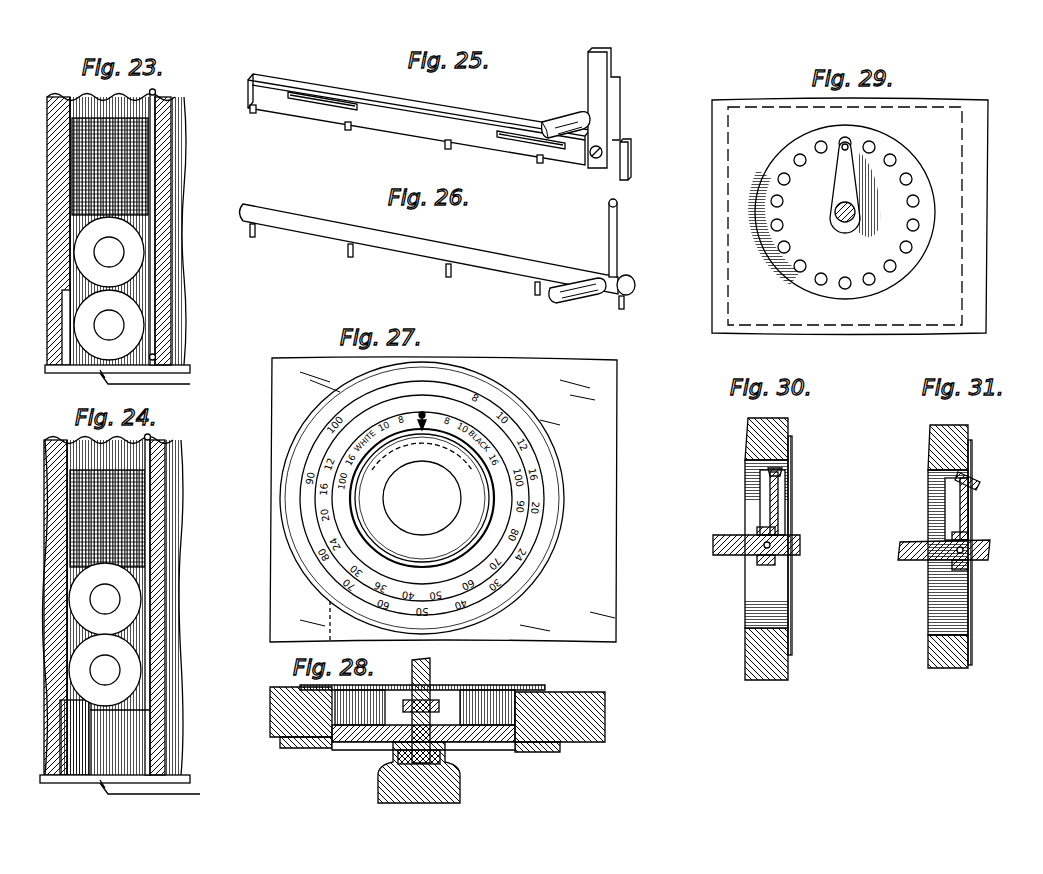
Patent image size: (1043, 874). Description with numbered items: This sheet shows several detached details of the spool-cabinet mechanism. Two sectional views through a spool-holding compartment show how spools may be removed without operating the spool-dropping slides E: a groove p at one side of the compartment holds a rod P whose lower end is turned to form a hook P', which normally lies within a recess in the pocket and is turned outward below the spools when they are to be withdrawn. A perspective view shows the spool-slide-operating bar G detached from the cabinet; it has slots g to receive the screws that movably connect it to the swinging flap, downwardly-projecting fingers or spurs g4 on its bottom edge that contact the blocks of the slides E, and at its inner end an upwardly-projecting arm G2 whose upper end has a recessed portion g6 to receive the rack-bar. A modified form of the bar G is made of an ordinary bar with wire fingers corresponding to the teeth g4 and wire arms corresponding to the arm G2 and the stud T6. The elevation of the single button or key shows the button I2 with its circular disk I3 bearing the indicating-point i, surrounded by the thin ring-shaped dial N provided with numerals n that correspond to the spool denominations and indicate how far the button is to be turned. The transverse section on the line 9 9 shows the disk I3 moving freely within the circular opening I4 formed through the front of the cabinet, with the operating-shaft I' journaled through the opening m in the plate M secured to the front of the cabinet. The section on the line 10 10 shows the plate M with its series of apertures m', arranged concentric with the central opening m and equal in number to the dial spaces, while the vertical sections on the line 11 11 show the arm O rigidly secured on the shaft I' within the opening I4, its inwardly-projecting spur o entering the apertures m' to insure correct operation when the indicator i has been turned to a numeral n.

In FIG. 23, the rod P is at (173, 227).
In FIG. 24, the rod P is at (174, 604).
In FIG. 23, the groove p is at (162, 292).
In FIG. 24, the groove p is at (155, 470).
In FIG. 23, the hook P' is at (177, 348).
In FIG. 24, the hook P' is at (120, 721).
In FIG. 23, the spool-dropping slide E is at (70, 368).
In FIG. 24, the spool-dropping slide E is at (60, 728).
In FIG. 25, the spool-slide-operating bar G is at (345, 96).
In FIG. 26, the spool-slide-operating bar G is at (490, 258).
In FIG. 25, the slot g is at (330, 100).
In FIG. 25, the finger or spur g4 is at (640, 168).
In FIG. 26, the finger or spur g4 is at (537, 290).
In FIG. 25, the recessed portion g6 is at (612, 68).
In FIG. 25, the upwardly-projecting arm G2 is at (620, 102).
In FIG. 26, the upwardly-projecting arm G2 is at (617, 246).
In FIG. 25, the cylinder T6 is at (575, 115).
In FIG. 26, the cylinder T6 is at (574, 290).
In FIG. 27, the numeral n is at (300, 466).
In FIG. 27, the ring-shaped dial N is at (558, 452).
In FIG. 28, the ring-shaped dial N is at (540, 752).
In FIG. 27, the indicating-point i is at (427, 422).
In FIG. 27, the button I2 is at (422, 498).
In FIG. 28, the button I2 is at (462, 797).
In FIG. 27, the circular disk I3 is at (422, 498).
In FIG. 28, the circular disk I3 is at (500, 752).
In FIG. 27, the section line 9 9 is at (650, 498).
In FIG. 28, the section line 10 10 is at (640, 722).
In FIG. 29, the section line 11 11 is at (845, 345).
In FIG. 28, the operating-shaft I' is at (432, 710).
In FIG. 29, the operating-shaft I' is at (840, 194).
In FIG. 30, the operating-shaft I' is at (747, 559).
In FIG. 31, the operating-shaft I' is at (956, 541).
In FIG. 28, the plate M is at (488, 688).
In FIG. 29, the plate M is at (895, 210).
In FIG. 30, the plate M is at (792, 448).
In FIG. 31, the plate M is at (972, 458).
In FIG. 28, the circular opening I4 is at (520, 690).
In FIG. 30, the circular opening I4 is at (770, 598).
In FIG. 31, the circular opening I4 is at (958, 590).
In FIG. 28, the arm O is at (440, 706).
In FIG. 29, the arm O is at (838, 180).
In FIG. 30, the arm O is at (772, 495).
In FIG. 31, the arm O is at (962, 495).
In FIG. 29, the spur o is at (848, 147).
In FIG. 30, the spur o is at (782, 470).
In FIG. 31, the spur o is at (980, 478).
In FIG. 30, the central opening m is at (787, 539).
In FIG. 31, the central opening m is at (974, 544).
In FIG. 28, the aperture m' is at (428, 701).
In FIG. 29, the aperture m' is at (862, 213).
In FIG. 30, the aperture m' is at (816, 546).
In FIG. 31, the aperture m' is at (993, 554).